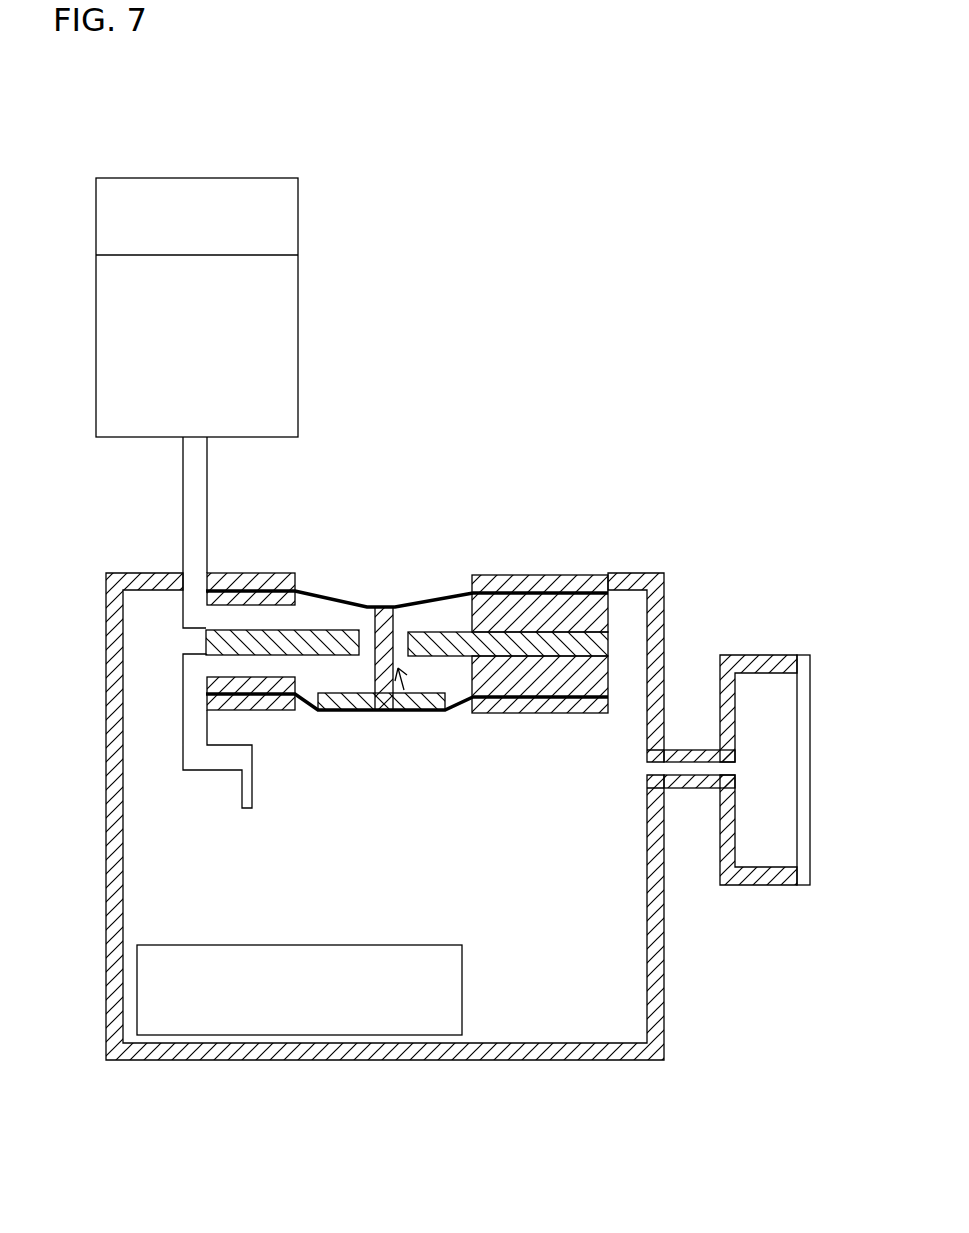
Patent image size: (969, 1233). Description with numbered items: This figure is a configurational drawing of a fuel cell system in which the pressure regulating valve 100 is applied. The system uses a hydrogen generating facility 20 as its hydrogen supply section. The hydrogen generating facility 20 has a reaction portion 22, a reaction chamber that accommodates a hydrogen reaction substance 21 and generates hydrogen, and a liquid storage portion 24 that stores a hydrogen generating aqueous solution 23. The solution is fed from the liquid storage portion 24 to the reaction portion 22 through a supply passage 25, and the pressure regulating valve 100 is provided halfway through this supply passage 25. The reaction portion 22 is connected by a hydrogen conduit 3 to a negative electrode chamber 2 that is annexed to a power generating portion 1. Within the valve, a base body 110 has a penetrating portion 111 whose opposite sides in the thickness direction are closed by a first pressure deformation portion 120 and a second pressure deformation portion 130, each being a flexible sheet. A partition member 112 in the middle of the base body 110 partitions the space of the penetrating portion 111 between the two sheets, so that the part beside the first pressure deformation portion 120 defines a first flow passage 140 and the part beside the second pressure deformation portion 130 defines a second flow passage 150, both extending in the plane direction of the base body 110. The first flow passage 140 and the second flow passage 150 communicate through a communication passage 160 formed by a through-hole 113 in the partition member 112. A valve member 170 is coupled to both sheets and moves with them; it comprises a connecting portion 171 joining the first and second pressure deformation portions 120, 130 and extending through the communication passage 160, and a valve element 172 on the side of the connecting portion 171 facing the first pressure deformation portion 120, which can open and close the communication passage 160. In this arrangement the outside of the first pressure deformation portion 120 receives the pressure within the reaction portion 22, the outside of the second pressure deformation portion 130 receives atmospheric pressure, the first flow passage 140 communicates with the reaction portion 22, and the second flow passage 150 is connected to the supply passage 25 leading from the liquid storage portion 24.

The power generating portion 1 is at (810, 663).
The negative electrode chamber 2 is at (775, 850).
The hydrogen conduit 3 is at (680, 755).
The hydrogen generating facility 20 is at (140, 507).
The hydrogen reaction substance 21 is at (242, 1008).
The reaction portion 22 is at (110, 930).
The hydrogen generating aqueous solution 23 is at (255, 332).
The liquid storage portion 24 is at (130, 198).
The supply passage 25 is at (200, 512).
The pressure regulating valve 100 is at (537, 480).
The base body 110 is at (562, 577).
The penetrating portion 111 is at (403, 589).
The partition member 112 is at (427, 630).
The through-hole 113 is at (368, 640).
The first pressure deformation portion 120 is at (303, 710).
The second pressure deformation portion 130 is at (312, 590).
The first flow passage 140 is at (358, 677).
The second flow passage 150 is at (290, 622).
The communication passage 160 is at (400, 648).
The valve member 170 is at (412, 717).
The connecting portion 171 is at (380, 703).
The valve element 172 is at (390, 717).